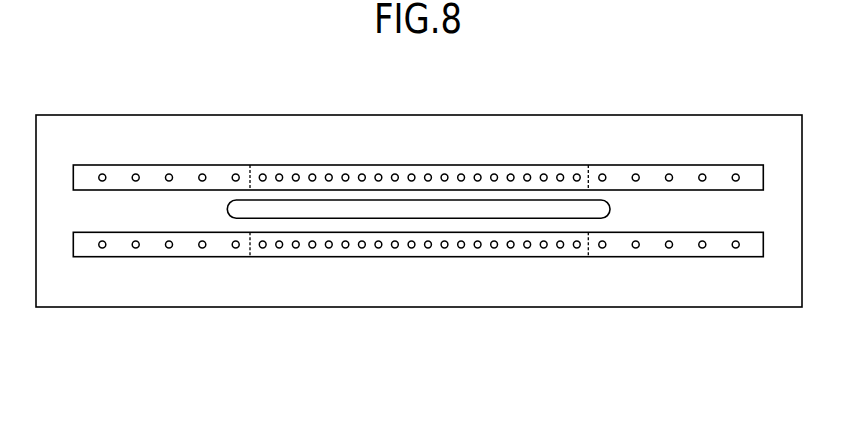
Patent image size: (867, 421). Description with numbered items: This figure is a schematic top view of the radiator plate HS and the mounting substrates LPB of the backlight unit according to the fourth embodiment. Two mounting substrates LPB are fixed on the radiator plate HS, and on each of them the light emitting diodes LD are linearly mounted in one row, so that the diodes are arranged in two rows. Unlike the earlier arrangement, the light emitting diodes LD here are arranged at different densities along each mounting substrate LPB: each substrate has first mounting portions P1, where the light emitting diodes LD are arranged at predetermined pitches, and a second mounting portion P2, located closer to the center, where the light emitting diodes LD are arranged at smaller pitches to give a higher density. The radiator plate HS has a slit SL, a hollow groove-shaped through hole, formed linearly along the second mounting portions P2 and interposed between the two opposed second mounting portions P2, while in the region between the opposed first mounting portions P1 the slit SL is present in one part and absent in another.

The light emitting diode LD is at (136, 240).
The mounting substrate LPB is at (218, 245).
The slit SL is at (497, 200).
The first mounting portion P1 is at (184, 245).
The second mounting portion P2 is at (402, 245).
The radiator plate HS is at (629, 295).